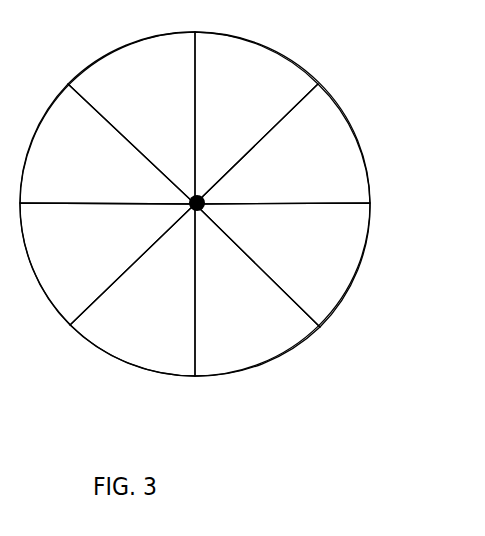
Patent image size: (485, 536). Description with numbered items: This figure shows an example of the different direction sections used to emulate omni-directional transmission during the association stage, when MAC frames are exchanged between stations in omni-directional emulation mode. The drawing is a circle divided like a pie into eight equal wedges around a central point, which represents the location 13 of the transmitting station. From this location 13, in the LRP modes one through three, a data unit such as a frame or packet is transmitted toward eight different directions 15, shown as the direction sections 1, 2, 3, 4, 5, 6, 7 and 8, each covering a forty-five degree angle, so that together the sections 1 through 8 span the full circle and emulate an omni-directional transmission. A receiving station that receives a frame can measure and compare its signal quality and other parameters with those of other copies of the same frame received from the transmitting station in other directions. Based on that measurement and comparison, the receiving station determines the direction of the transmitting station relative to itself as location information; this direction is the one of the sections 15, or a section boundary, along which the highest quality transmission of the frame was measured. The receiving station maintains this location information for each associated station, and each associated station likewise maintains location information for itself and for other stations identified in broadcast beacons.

The direction section 1 is at (131, 118).
The direction section 2 is at (256, 118).
The direction section 3 is at (282, 144).
The direction section 4 is at (282, 265).
The direction section 5 is at (257, 290).
The direction section 6 is at (132, 290).
The direction section 7 is at (107, 264).
The direction section 8 is at (107, 144).
The location of transmitting station 13 is at (204, 198).
The different directions 15 is at (357, 136).